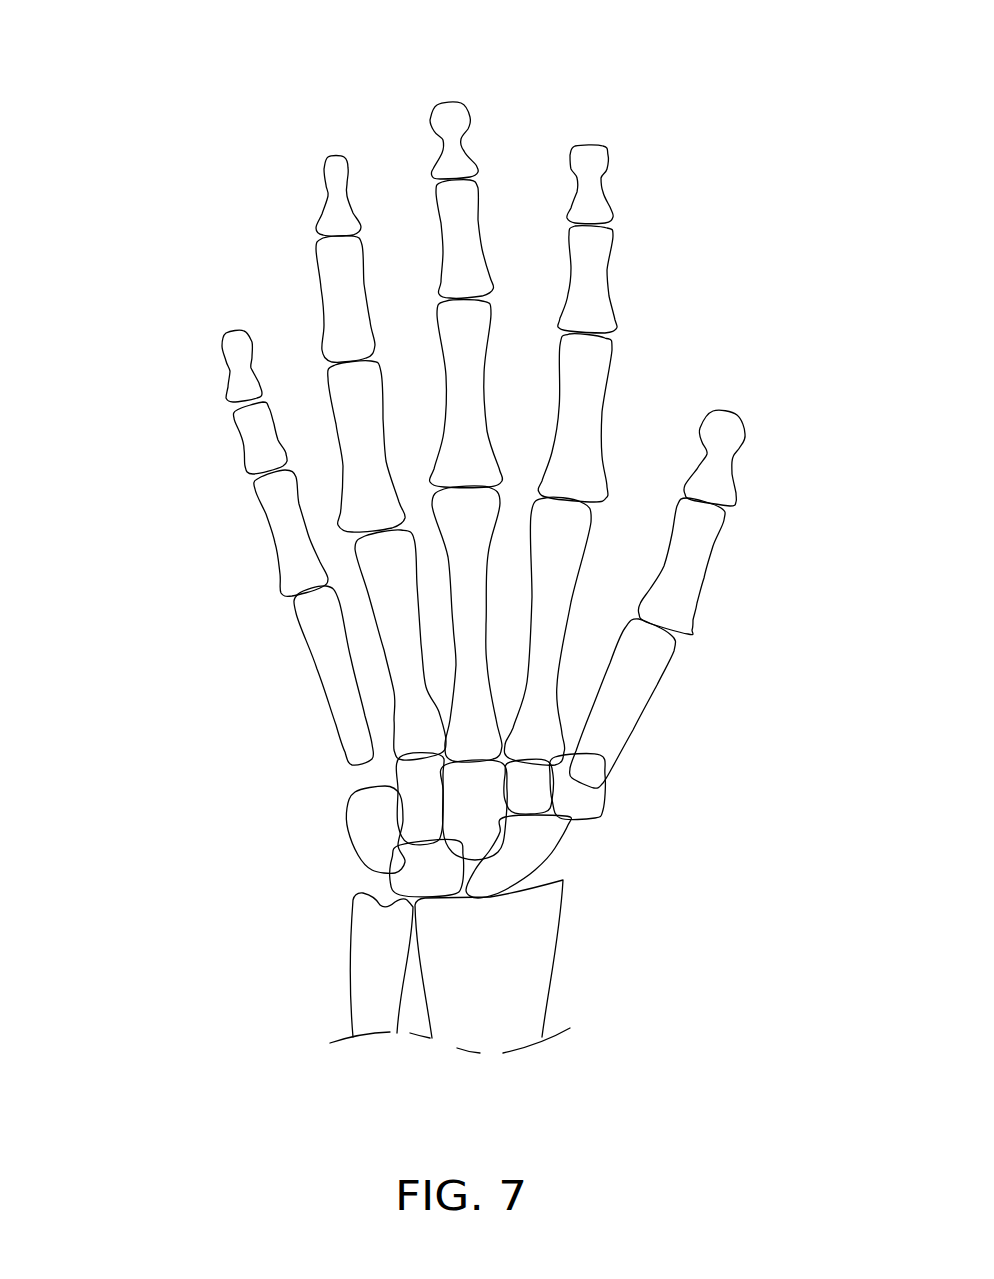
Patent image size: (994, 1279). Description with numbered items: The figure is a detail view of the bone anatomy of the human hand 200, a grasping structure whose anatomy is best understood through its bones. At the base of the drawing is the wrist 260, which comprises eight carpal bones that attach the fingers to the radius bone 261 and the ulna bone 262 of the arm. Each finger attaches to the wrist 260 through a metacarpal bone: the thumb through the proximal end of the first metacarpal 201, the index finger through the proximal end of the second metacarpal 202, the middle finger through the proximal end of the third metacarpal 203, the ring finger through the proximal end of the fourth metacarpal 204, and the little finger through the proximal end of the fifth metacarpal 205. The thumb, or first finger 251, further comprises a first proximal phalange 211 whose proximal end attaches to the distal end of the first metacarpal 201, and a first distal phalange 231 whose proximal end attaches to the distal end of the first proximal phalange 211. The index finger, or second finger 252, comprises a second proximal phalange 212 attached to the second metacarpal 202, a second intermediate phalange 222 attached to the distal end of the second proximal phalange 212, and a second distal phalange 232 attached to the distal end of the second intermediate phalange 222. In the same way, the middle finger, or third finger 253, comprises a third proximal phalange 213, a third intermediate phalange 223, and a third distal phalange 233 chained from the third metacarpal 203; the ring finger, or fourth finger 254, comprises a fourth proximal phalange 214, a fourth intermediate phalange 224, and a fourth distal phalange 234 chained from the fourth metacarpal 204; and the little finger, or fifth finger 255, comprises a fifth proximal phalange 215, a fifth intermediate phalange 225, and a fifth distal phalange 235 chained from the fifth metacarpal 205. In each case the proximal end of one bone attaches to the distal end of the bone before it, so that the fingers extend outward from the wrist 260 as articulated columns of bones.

The human hand 200 is at (132, 194).
The first metacarpal 201 is at (618, 718).
The second metacarpal 202 is at (537, 690).
The third metacarpal 203 is at (468, 673).
The fourth metacarpal 204 is at (407, 667).
The fifth metacarpal 205 is at (320, 660).
The first proximal phalange 211 is at (687, 572).
The second proximal phalange 212 is at (597, 447).
The third proximal phalange 213 is at (475, 430).
The fourth proximal phalange 214 is at (360, 418).
The fifth proximal phalange 215 is at (277, 525).
The second intermediate phalange 222 is at (585, 260).
The third intermediate phalange 223 is at (469, 255).
The fourth intermediate phalange 224 is at (337, 322).
The fifth intermediate phalange 225 is at (252, 430).
The first distal phalange 231 is at (727, 457).
The second distal phalange 232 is at (590, 197).
The third distal phalange 233 is at (453, 160).
The fourth distal phalange 234 is at (333, 178).
The fifth distal phalange 235 is at (226, 353).
The first finger 251 is at (757, 415).
The second finger 252 is at (608, 150).
The third finger 253 is at (450, 95).
The fourth finger 254 is at (334, 148).
The fifth finger 255 is at (222, 326).
The wrist 260 is at (537, 840).
The radius bone 261 is at (525, 967).
The ulna bone 262 is at (367, 948).